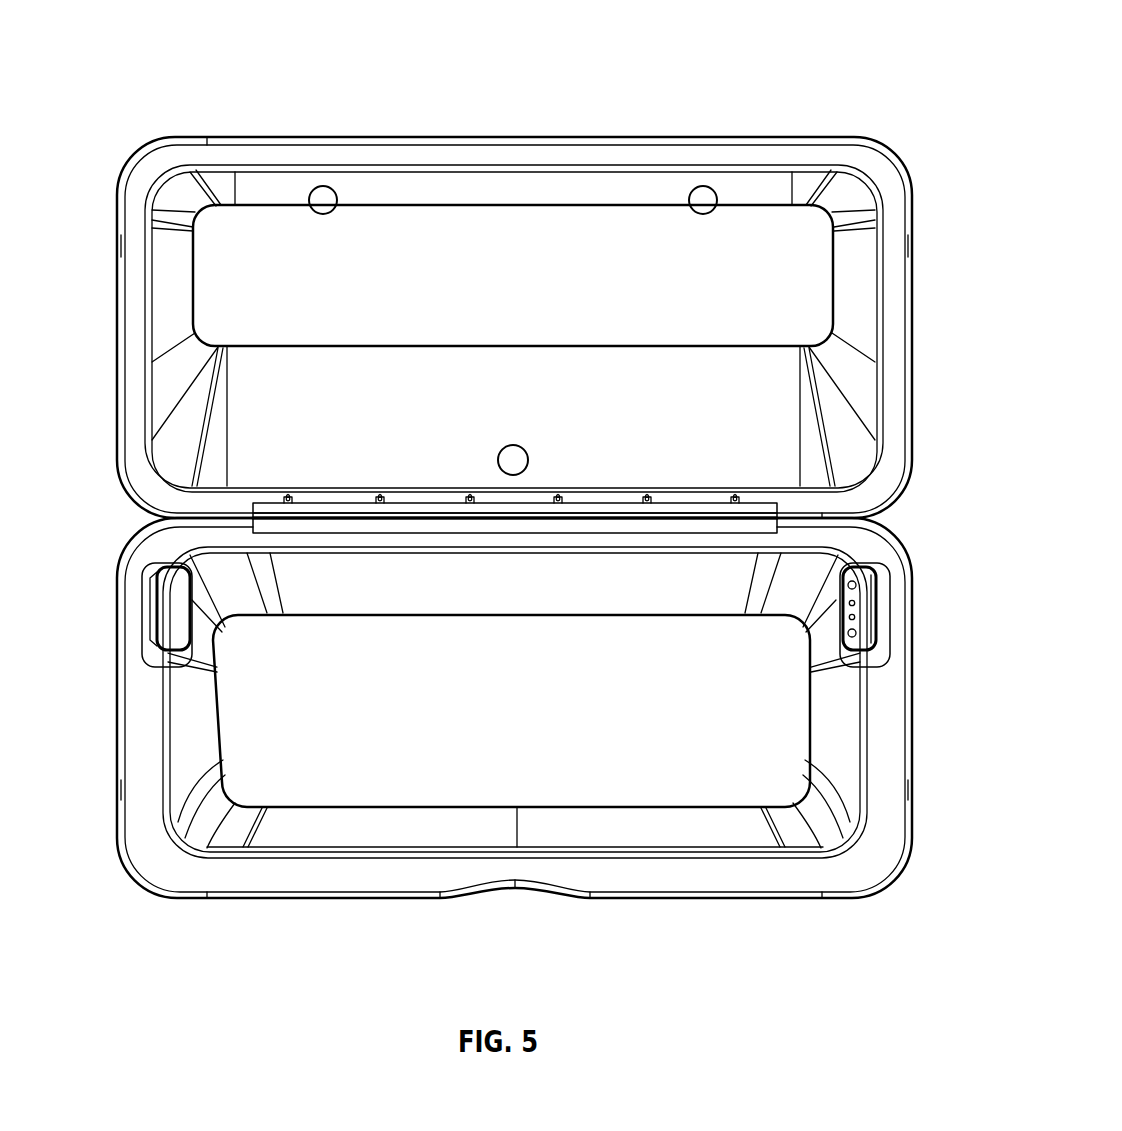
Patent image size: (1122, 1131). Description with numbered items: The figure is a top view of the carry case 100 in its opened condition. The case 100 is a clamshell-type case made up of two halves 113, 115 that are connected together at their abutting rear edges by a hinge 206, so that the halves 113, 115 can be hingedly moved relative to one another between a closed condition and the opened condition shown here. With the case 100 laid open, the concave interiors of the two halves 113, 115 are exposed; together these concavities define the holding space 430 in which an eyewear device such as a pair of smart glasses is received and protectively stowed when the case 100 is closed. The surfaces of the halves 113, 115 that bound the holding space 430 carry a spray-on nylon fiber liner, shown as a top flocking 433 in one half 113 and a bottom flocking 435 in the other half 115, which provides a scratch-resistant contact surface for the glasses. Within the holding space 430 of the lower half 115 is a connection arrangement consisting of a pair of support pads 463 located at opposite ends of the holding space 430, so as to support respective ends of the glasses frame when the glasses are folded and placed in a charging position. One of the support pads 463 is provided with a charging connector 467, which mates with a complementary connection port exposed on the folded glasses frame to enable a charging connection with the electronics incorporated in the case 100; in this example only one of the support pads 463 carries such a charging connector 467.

The case 100 is at (892, 62).
The half 113 is at (867, 272).
The half 115 is at (848, 742).
The hinge 206 is at (416, 502).
The holding space 430 is at (188, 720).
The top flocking 433 is at (537, 279).
The bottom flocking 435 is at (537, 735).
The support pads 463 is at (161, 606).
The charging connector 467 is at (843, 617).